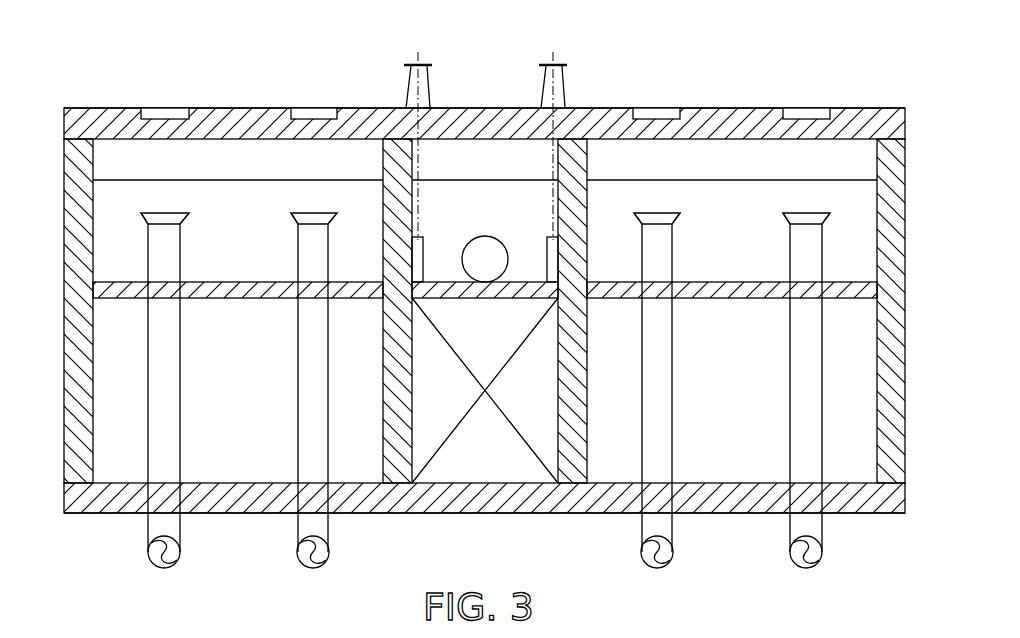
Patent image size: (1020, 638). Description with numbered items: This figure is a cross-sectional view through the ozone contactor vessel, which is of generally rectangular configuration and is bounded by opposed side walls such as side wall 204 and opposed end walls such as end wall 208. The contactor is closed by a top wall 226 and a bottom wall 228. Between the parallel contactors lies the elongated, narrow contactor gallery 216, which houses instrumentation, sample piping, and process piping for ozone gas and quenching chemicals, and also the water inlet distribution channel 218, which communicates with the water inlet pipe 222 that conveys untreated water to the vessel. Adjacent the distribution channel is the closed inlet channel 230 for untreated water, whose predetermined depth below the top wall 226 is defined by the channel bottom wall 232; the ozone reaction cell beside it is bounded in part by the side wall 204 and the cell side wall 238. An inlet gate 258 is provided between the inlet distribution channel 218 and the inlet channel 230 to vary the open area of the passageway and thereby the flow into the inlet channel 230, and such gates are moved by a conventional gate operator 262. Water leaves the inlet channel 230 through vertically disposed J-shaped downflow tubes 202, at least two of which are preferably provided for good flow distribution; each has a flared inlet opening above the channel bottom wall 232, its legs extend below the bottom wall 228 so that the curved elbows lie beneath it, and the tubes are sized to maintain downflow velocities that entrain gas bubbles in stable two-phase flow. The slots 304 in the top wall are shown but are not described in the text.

The downflow tube 202 is at (305, 452).
The side wall 204 is at (903, 475).
The end wall 208 is at (64, 470).
The contactor gallery 216 is at (475, 477).
The water inlet distribution channel 218 is at (482, 147).
The water inlet pipe 222 is at (466, 240).
The top wall 226 is at (870, 120).
The bottom wall 228 is at (733, 510).
The inlet channel 230 is at (727, 150).
The channel bottom wall 232 is at (737, 292).
The cell side wall 238 is at (578, 330).
The inlet gate 258 is at (545, 262).
The gate operator 262 is at (407, 76).
The slot 304 is at (160, 108).